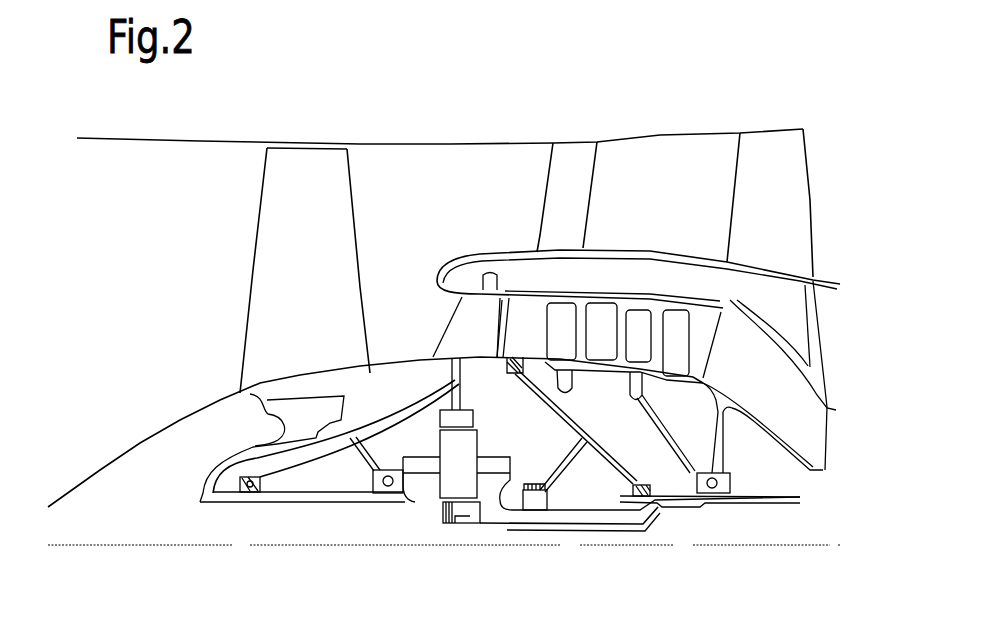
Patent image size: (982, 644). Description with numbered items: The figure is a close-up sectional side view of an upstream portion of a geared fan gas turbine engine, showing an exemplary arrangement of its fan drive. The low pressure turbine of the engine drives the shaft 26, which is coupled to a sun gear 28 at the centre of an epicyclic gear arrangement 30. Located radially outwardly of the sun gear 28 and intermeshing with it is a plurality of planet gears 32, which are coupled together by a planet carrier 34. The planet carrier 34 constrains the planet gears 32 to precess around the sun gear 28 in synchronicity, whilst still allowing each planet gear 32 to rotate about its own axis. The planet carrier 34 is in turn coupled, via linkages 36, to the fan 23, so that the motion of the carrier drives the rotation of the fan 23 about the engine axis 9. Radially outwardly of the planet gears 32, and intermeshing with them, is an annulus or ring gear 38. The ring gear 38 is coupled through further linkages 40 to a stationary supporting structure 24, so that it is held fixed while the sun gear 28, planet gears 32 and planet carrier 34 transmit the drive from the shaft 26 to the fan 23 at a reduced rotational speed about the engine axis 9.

The engine axis 9 is at (210, 547).
The fan 23 is at (277, 308).
The stationary supporting structure 24 is at (470, 323).
The shaft 26 is at (700, 503).
The sun gear 28 is at (458, 520).
The epicyclic gear arrangement 30 is at (418, 505).
The planet gears 32 is at (448, 490).
The planet carrier 34 is at (503, 493).
The linkages 36 is at (417, 500).
The ring gear 38 is at (441, 420).
The linkages 40 is at (467, 382).